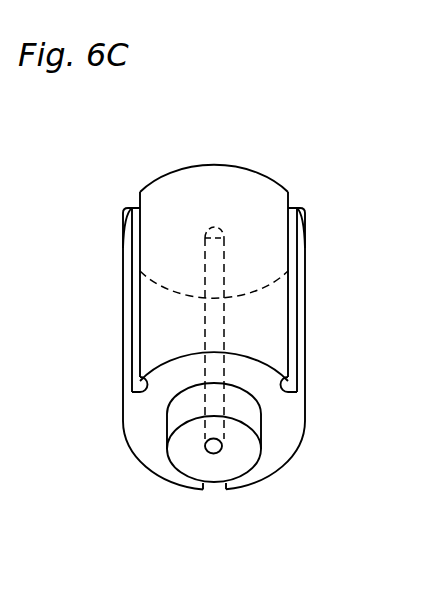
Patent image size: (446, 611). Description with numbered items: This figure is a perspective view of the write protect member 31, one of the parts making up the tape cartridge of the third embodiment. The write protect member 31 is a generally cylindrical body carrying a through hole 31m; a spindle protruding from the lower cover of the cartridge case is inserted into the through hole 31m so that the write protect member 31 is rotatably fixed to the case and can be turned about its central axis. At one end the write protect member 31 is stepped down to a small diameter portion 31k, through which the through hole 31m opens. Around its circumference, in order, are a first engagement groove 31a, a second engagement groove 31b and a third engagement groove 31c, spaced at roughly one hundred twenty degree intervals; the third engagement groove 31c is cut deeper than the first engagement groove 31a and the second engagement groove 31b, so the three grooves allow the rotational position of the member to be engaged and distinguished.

The write protect member 31 is at (306, 162).
The first engagement groove 31a is at (297, 305).
The second engagement groove 31b is at (133, 331).
The small diameter portion 31k is at (258, 413).
The through hole 31m is at (214, 449).
The third engagement groove 31c is at (213, 492).